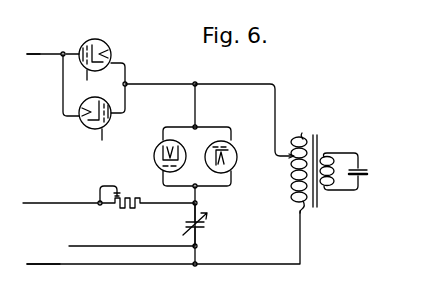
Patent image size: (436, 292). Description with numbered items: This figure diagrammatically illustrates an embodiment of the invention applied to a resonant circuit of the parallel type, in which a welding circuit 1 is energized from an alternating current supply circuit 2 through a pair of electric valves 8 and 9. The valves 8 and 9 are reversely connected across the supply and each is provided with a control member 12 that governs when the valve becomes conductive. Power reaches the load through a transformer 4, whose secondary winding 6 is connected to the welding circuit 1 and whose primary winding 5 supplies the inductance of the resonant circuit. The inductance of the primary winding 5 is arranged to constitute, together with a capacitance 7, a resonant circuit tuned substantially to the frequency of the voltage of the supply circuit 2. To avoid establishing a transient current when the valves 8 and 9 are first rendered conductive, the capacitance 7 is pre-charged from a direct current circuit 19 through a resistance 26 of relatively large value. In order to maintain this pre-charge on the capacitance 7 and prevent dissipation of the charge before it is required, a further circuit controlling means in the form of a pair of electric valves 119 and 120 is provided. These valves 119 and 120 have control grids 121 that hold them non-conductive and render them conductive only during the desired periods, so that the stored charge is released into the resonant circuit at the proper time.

The welding circuit 1 is at (363, 162).
The alternating current supply circuit 2 is at (39, 56).
The transformer 4 is at (314, 207).
The primary winding 5 is at (292, 176).
The secondary winding 6 is at (329, 159).
The capacitance 7 is at (201, 226).
The electric valve 8 is at (80, 40).
The electric valve 9 is at (80, 125).
The control member 12 is at (98, 42).
The direct current circuit 19 is at (85, 205).
The resistance 26 is at (131, 205).
The electric valve 119 is at (160, 142).
The electric valve 120 is at (226, 144).
The control grid 121 is at (160, 168).